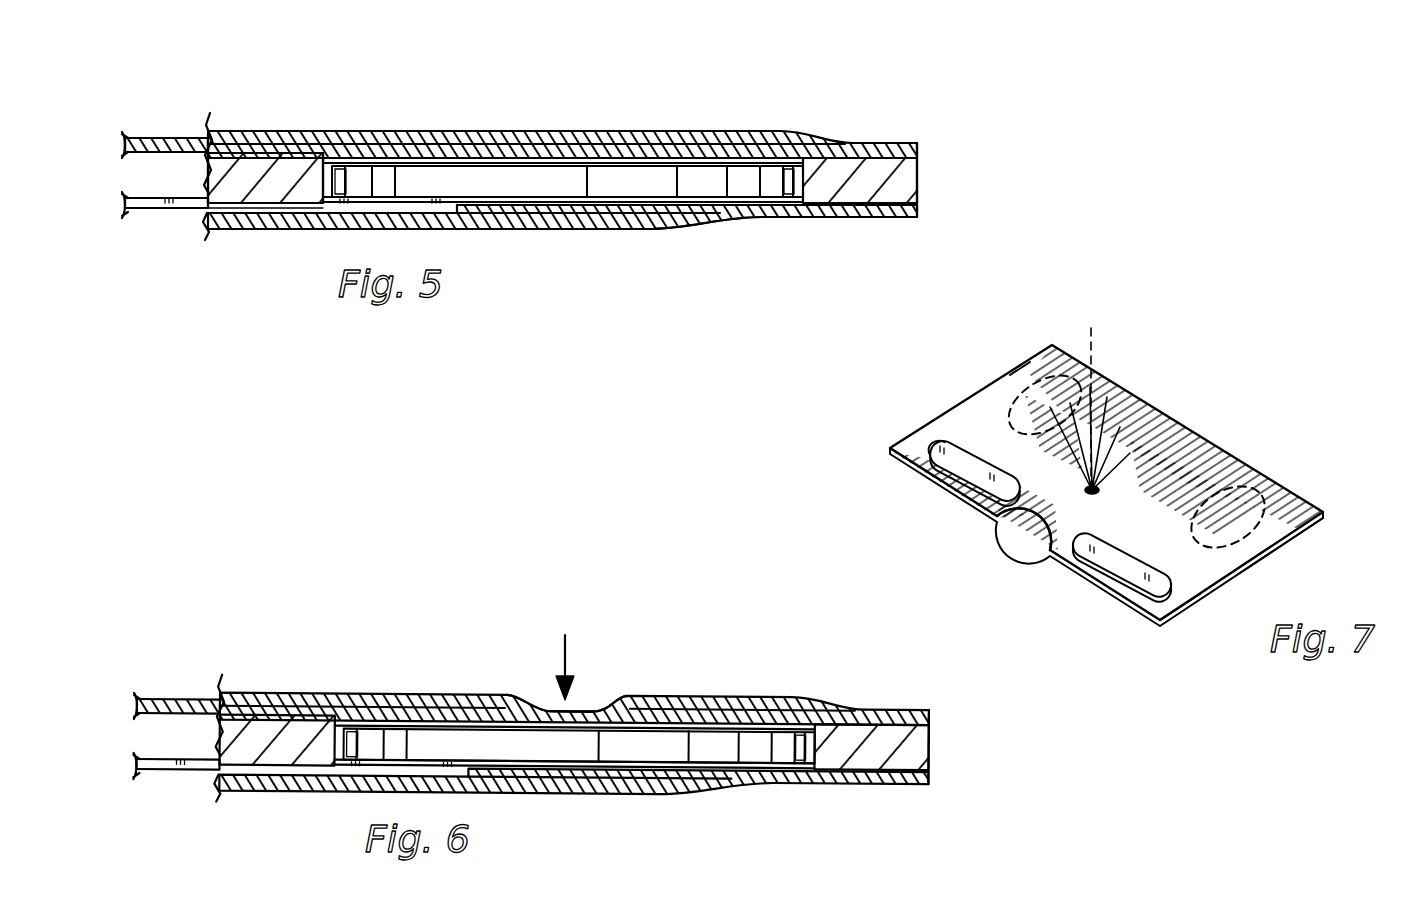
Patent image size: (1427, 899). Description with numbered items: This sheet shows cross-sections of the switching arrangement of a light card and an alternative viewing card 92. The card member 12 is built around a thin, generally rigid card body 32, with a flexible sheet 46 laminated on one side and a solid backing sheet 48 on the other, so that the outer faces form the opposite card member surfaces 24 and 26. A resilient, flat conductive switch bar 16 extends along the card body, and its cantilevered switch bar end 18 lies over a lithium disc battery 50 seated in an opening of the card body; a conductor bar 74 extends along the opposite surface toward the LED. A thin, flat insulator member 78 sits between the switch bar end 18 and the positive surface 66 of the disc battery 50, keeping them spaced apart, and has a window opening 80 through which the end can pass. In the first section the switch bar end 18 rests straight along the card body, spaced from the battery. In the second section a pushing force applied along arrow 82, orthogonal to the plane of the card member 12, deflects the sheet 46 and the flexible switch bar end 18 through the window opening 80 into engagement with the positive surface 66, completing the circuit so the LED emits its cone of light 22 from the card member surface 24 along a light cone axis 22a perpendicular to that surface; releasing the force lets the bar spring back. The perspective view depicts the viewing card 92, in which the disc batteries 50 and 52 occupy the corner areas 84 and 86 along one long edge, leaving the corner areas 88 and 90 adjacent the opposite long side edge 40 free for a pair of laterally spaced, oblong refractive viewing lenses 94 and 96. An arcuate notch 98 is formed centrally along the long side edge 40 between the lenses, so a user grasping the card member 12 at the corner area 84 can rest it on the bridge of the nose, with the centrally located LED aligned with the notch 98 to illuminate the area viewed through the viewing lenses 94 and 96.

In FIG. 7, the card member 12 is at (1338, 500).
In FIG. 5, the switch bar 16 is at (255, 150).
In FIG. 6, the switch bar end 18 is at (597, 720).
In FIG. 7, the cone of light 22 is at (1116, 410).
In FIG. 7, the light cone axis 22a is at (1091, 343).
In FIG. 5, the card member surface 24 is at (645, 128).
In FIG. 5, the card member surface 26 is at (596, 230).
In FIG. 5, the card body 32 is at (207, 137).
In FIG. 7, the long side edge 40 is at (1100, 597).
In FIG. 5, the sheet 46 is at (330, 135).
In FIG. 6, the sheet 46 is at (305, 690).
In FIG. 5, the backing sheet 48 is at (918, 210).
In FIG. 5, the disc battery 50 is at (633, 183).
In FIG. 6, the disc battery 50 is at (655, 740).
In FIG. 7, the disc battery 50 is at (1272, 462).
In FIG. 7, the disc battery 52 is at (997, 388).
In FIG. 6, the positive surface 66 is at (515, 697).
In FIG. 5, the conductor bar 74 is at (260, 227).
In FIG. 5, the insulator member 78 is at (437, 137).
In FIG. 5, the window opening 80 is at (505, 158).
In FIG. 6, the window opening 80 is at (630, 720).
In FIG. 6, the arrow 82 is at (567, 635).
In FIG. 7, the corner area 84 is at (1303, 533).
In FIG. 7, the corner area 86 is at (1020, 375).
In FIG. 7, the corner area 88 is at (1172, 622).
In FIG. 7, the corner area 90 is at (908, 450).
In FIG. 7, the viewing card 92 is at (1216, 350).
In FIG. 7, the viewing lens 94 is at (1130, 572).
In FIG. 7, the viewing lens 96 is at (927, 440).
In FIG. 7, the notch 98 is at (1023, 522).